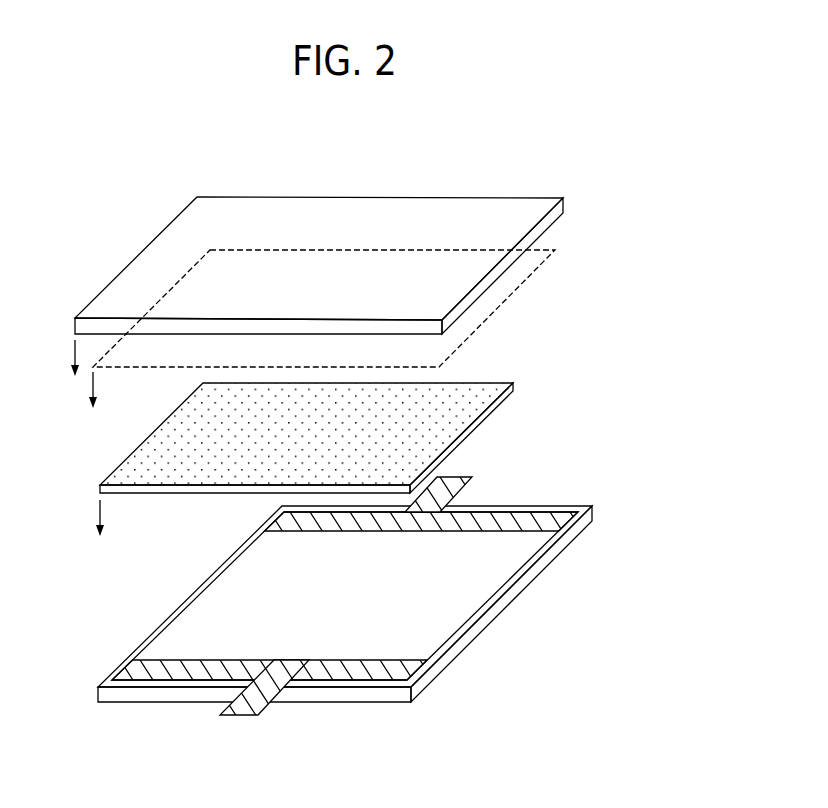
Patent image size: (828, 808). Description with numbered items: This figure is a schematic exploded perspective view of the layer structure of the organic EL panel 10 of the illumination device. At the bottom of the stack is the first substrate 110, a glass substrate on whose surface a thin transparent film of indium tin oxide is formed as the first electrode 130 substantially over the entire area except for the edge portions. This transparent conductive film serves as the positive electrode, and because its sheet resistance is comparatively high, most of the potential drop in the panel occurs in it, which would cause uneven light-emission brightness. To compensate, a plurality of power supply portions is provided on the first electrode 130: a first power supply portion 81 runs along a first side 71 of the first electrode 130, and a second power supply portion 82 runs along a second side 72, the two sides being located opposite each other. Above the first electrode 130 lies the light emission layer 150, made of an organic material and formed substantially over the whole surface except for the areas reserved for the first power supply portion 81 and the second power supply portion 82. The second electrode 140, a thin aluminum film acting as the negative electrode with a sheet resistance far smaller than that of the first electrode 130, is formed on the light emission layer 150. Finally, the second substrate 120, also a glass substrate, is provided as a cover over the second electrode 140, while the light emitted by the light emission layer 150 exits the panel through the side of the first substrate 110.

The organic EL panel 10 is at (594, 164).
The second substrate 120 is at (564, 200).
The second electrode 140 is at (500, 306).
The light emission layer 150 is at (514, 385).
The first substrate 110 is at (593, 509).
The first electrode 130 is at (196, 592).
The first side 71 is at (572, 507).
The second side 72 is at (398, 683).
The first power supply portion 81 is at (526, 520).
The second power supply portion 82 is at (371, 660).